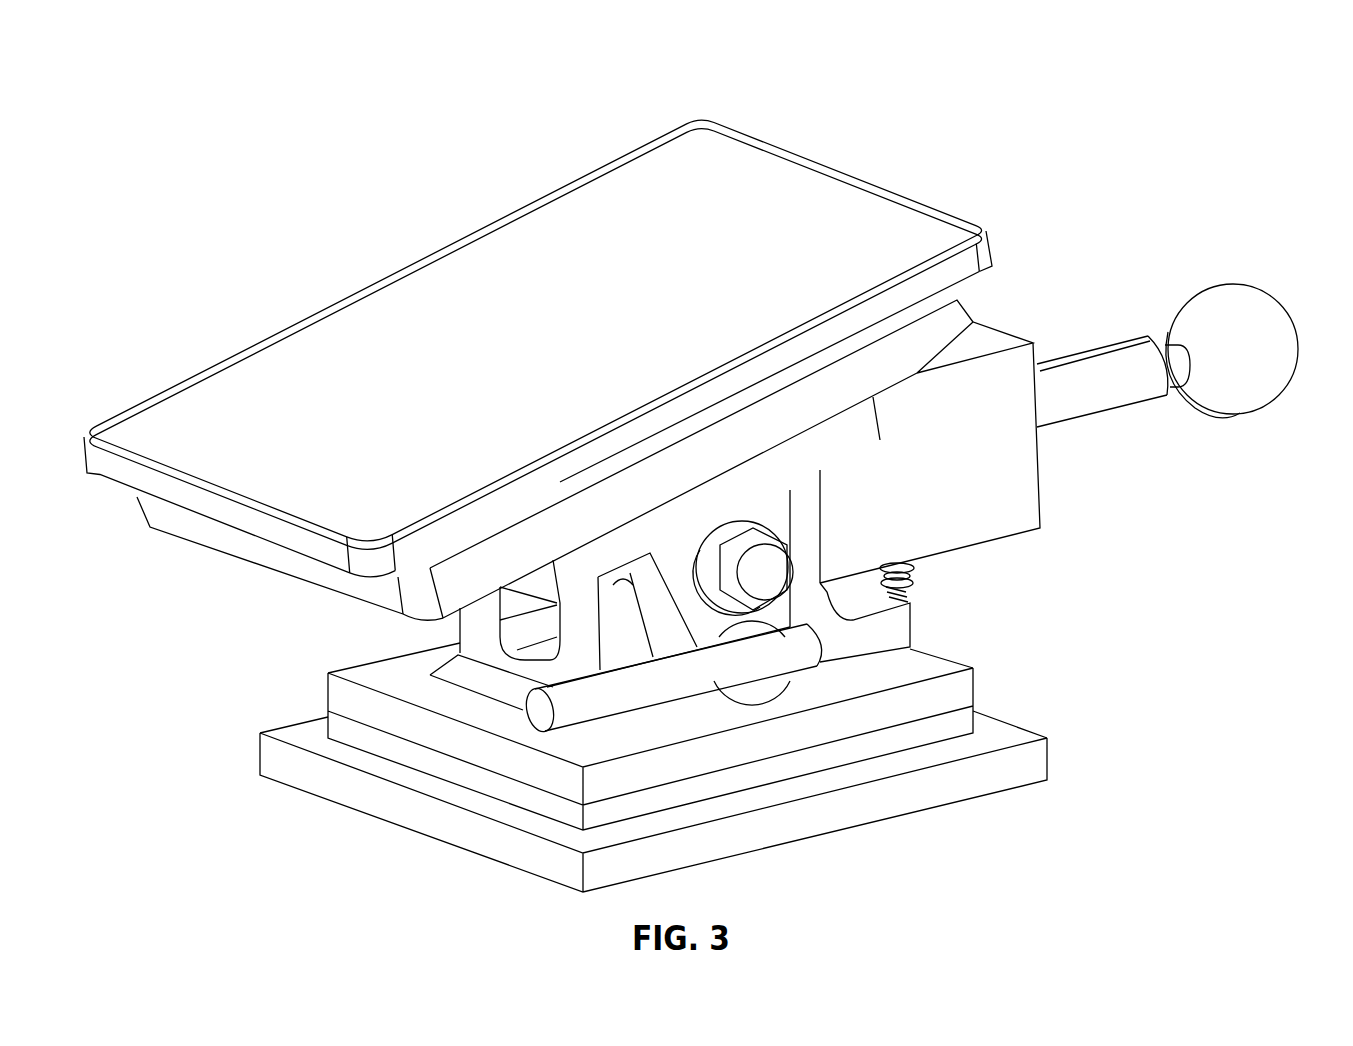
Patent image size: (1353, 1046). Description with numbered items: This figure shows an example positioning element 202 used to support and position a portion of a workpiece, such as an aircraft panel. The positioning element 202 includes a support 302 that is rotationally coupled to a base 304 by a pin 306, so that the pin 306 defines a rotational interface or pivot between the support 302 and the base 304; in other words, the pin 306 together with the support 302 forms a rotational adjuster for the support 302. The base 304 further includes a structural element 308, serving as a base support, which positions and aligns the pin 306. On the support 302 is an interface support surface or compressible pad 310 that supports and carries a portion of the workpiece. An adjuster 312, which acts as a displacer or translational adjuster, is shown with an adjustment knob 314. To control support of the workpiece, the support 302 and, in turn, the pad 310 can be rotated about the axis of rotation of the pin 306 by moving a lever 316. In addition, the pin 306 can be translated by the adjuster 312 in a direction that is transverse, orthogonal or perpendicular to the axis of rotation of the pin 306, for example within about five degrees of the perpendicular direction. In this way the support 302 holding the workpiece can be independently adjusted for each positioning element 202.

The positioning element 202 is at (985, 86).
The support 302 is at (962, 320).
The base 304 is at (962, 652).
The pin 306 is at (800, 543).
The structural element 308 is at (808, 520).
The interface support surface/pad 310 is at (757, 160).
The adjuster 312 is at (997, 516).
The adjustment knob 314 is at (1228, 283).
The lever 316 is at (610, 700).